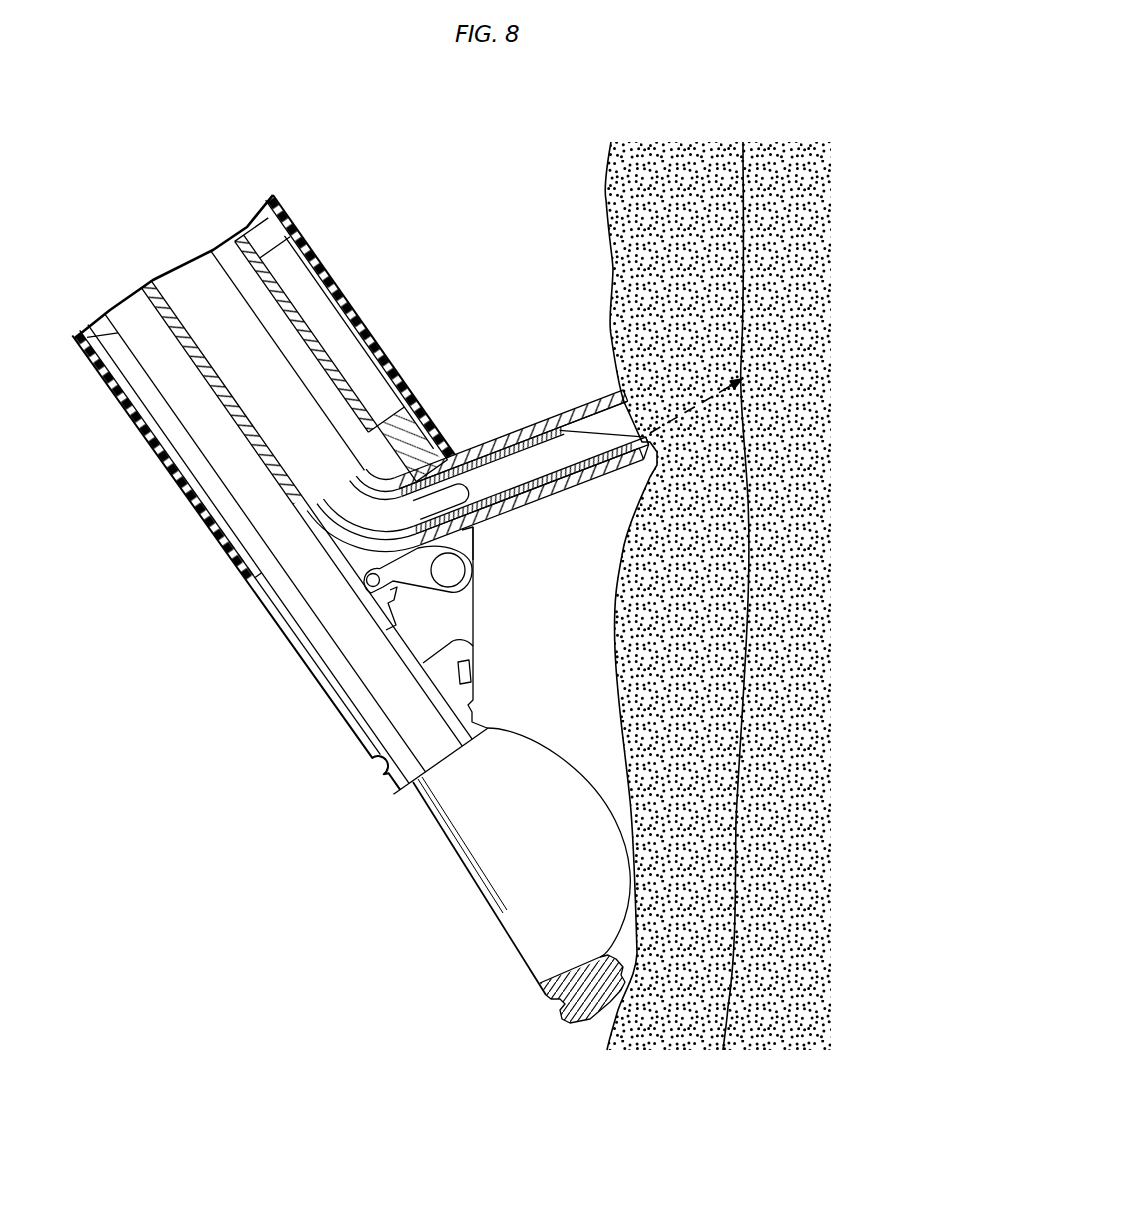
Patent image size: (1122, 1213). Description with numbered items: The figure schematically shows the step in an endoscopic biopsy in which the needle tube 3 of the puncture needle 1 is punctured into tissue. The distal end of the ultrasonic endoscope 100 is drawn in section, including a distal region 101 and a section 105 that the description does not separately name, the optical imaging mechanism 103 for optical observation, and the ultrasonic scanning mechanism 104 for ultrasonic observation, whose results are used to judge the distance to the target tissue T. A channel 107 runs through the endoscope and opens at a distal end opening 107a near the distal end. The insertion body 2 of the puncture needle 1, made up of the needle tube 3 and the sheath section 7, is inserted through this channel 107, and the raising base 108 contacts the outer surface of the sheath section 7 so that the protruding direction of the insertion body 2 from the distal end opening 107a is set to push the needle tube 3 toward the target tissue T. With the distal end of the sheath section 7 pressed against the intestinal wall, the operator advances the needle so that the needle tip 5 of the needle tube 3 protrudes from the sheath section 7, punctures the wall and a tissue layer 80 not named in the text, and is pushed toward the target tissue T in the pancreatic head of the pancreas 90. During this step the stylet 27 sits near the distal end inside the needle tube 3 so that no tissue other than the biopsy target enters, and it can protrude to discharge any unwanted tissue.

The ultrasonic endoscope 100 is at (378, 543).
The distal end portion of insertion section 101 is at (305, 193).
The bending portion 105 is at (110, 410).
The channel 107 is at (300, 367).
The distal end opening 107a is at (480, 542).
The raising base 108 is at (432, 585).
The optical imaging mechanism 103 is at (472, 672).
The ultrasonic scanning mechanism 104 is at (642, 863).
The puncture needle 1 is at (480, 436).
The insertion body 2 is at (530, 397).
The needle tube 3 is at (560, 430).
The needle tip 5 is at (648, 462).
The sheath section 7 is at (497, 452).
The stylet 27 is at (453, 500).
The mucosal layer 80 is at (677, 217).
The pancreas 90 is at (760, 263).
The target tissue T is at (762, 366).